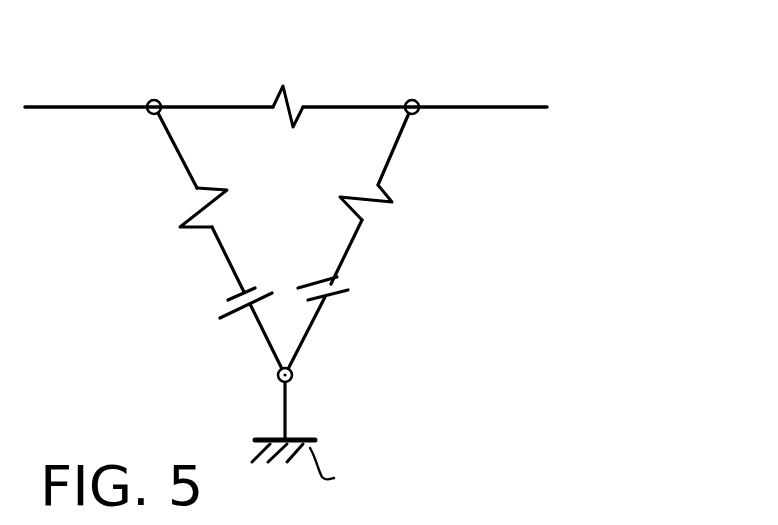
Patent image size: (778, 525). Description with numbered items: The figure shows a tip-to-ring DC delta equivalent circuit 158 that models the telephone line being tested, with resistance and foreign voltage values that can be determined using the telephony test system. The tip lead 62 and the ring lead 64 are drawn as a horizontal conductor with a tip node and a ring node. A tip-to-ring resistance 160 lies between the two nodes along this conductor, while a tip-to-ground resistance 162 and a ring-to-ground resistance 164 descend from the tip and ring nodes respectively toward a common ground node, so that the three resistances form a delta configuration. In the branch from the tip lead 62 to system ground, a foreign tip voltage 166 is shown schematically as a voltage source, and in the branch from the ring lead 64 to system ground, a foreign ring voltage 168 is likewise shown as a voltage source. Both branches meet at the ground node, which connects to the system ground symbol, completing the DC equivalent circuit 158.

The tip lead 62 is at (84, 108).
The ring lead 64 is at (525, 108).
The DC equivalent circuit 158 is at (507, 312).
The tip-to-ring resistance 160 is at (304, 106).
The tip-to-ground resistance 162 is at (211, 189).
The ring-to-ground resistance 164 is at (391, 199).
The foreign tip voltage 166 is at (237, 320).
The foreign ring voltage 168 is at (344, 290).